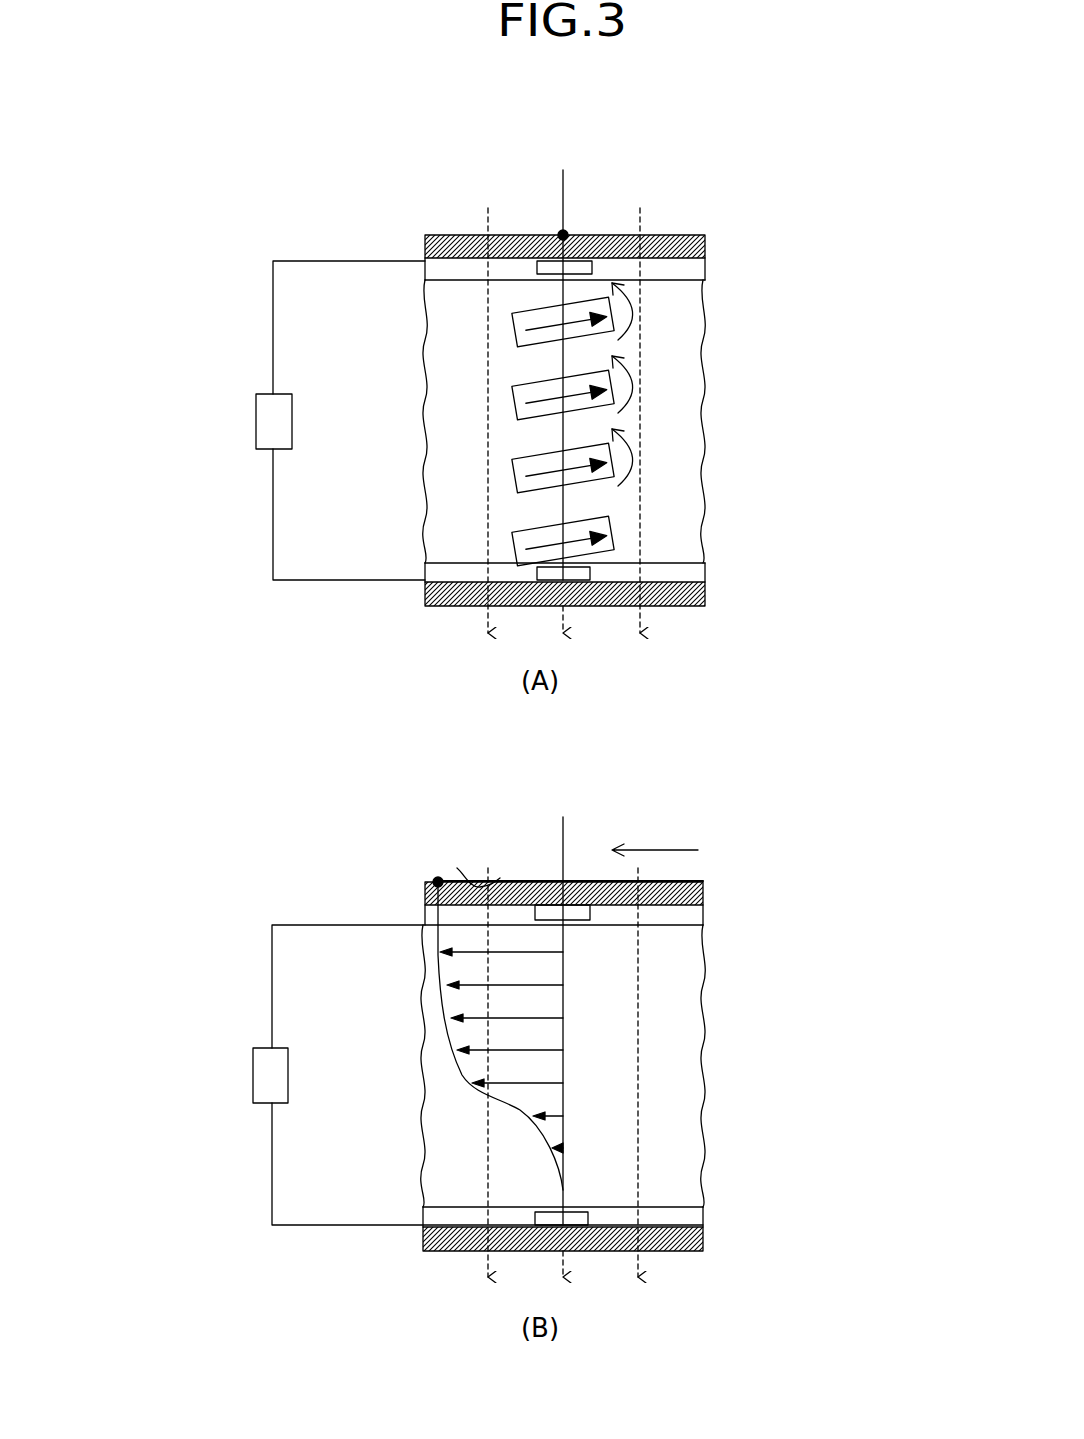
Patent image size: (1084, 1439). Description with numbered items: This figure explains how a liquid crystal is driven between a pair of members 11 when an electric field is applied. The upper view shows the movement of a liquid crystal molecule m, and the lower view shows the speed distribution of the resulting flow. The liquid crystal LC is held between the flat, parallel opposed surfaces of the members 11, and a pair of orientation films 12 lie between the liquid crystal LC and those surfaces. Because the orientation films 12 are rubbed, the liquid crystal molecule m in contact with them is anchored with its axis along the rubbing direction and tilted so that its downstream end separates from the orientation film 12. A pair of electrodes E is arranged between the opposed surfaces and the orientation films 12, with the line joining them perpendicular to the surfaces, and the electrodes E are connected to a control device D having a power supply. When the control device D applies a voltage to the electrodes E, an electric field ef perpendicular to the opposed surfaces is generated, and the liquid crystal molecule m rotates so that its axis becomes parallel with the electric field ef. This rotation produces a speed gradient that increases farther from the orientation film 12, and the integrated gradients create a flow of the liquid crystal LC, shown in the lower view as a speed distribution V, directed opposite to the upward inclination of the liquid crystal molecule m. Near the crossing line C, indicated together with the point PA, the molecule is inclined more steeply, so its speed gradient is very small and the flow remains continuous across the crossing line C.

The member 11 is at (683, 238).
The orientation film 12 is at (447, 285).
The control device D is at (262, 425).
The liquid crystal LC is at (416, 454).
The crossing line C is at (563, 187).
The polarization axis / reference point PA is at (563, 235).
The electrode E is at (550, 270).
The electric field ef is at (487, 320).
The liquid crystal molecule m is at (595, 333).
The voltage distribution V is at (438, 960).